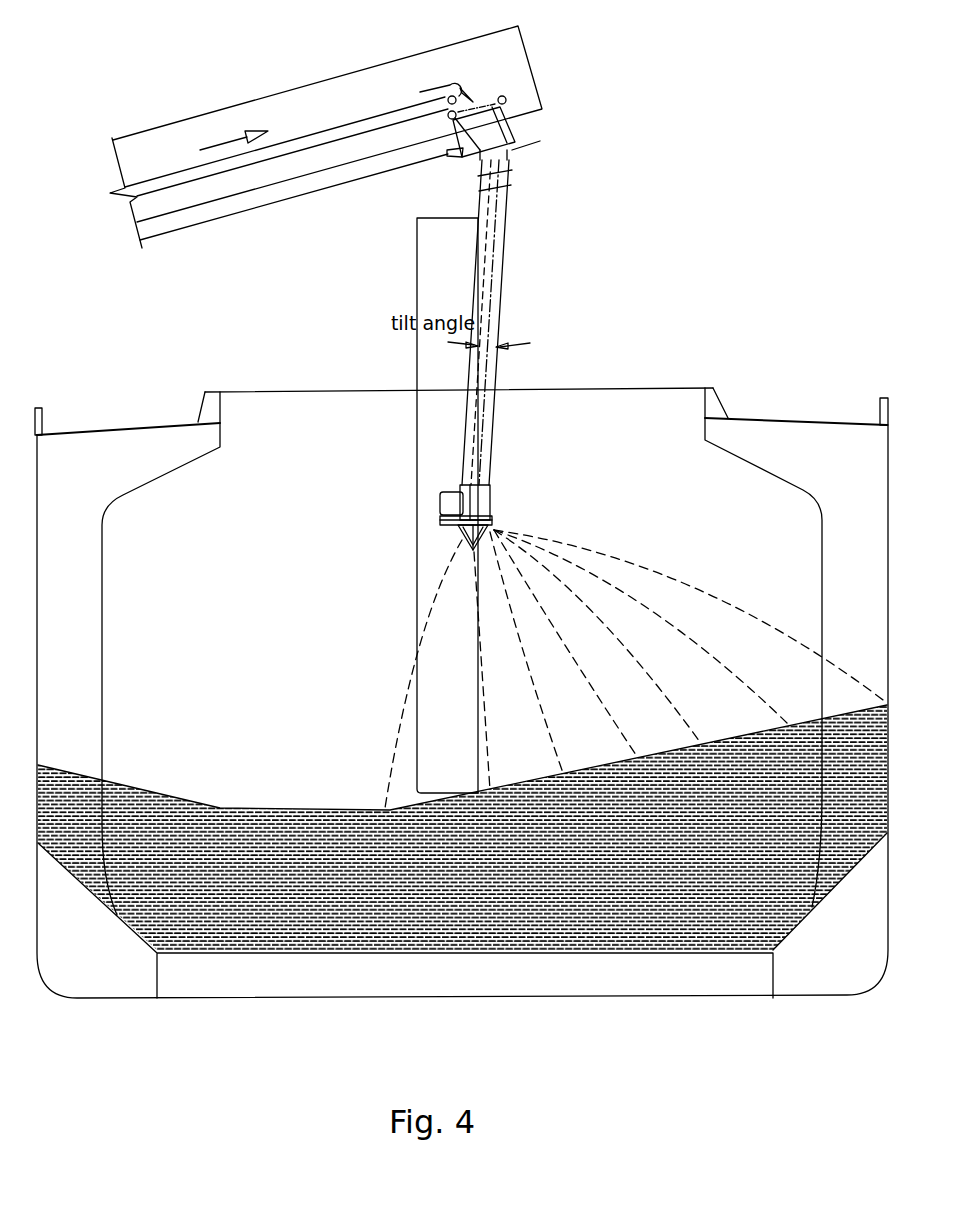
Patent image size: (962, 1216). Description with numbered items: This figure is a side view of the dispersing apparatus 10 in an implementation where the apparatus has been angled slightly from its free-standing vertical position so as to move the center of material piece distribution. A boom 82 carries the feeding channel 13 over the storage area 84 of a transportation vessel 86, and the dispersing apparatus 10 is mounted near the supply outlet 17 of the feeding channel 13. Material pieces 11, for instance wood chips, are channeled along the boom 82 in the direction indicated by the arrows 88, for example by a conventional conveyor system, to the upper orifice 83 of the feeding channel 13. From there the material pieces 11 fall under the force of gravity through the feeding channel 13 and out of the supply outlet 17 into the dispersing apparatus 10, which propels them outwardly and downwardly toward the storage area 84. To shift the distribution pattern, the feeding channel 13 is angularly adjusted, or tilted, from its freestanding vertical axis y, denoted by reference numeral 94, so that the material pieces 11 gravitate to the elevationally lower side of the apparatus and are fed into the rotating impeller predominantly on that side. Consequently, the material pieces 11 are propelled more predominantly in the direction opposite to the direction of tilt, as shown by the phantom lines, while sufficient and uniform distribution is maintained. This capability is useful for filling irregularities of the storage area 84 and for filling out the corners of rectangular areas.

The boom 82 is at (480, 43).
The arrows 88 is at (225, 145).
The upper orifice 83 is at (527, 147).
The feeding channel 13 is at (510, 250).
The supply outlet 17 is at (488, 483).
The dispersing apparatus 10 is at (507, 517).
The material pieces 11 is at (693, 622).
The vertical axis y 94 is at (500, 697).
The storage area 84 is at (330, 558).
The transportation vessel 86 is at (803, 418).